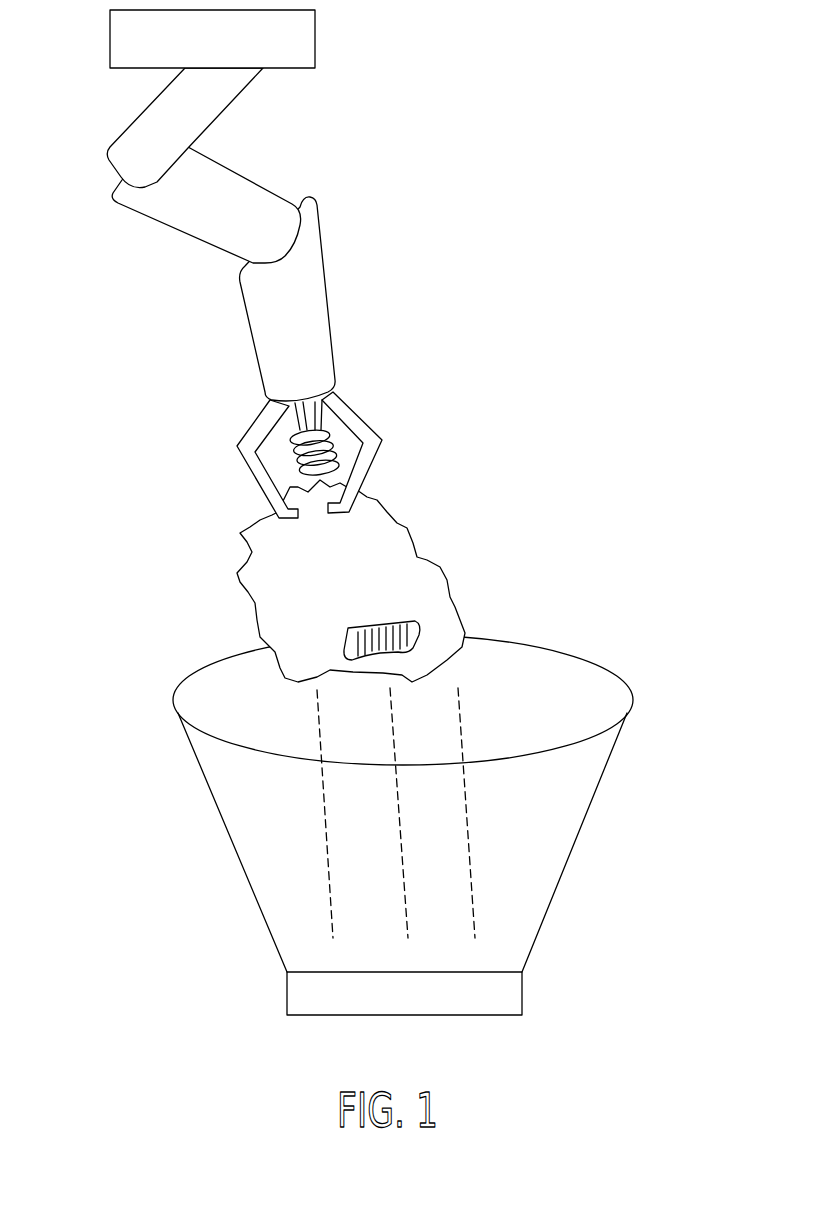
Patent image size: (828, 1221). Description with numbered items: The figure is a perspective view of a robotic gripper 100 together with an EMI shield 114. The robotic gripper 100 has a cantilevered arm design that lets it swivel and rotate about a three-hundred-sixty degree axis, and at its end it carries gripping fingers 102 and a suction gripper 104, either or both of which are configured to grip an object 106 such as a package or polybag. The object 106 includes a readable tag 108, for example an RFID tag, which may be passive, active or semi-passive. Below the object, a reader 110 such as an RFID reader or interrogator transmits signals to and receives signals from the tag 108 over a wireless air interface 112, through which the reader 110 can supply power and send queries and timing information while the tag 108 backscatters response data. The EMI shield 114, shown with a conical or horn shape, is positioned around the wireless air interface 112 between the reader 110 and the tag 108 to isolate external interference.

The robotic gripper 100 is at (373, 164).
The gripping fingers 102 is at (367, 420).
The suction gripper 104 is at (293, 440).
The object 106 is at (419, 558).
The readable tag 108 is at (420, 627).
The reader 110 is at (485, 1015).
The wireless air interface 112 is at (467, 842).
The EMI shield 114 is at (567, 651).